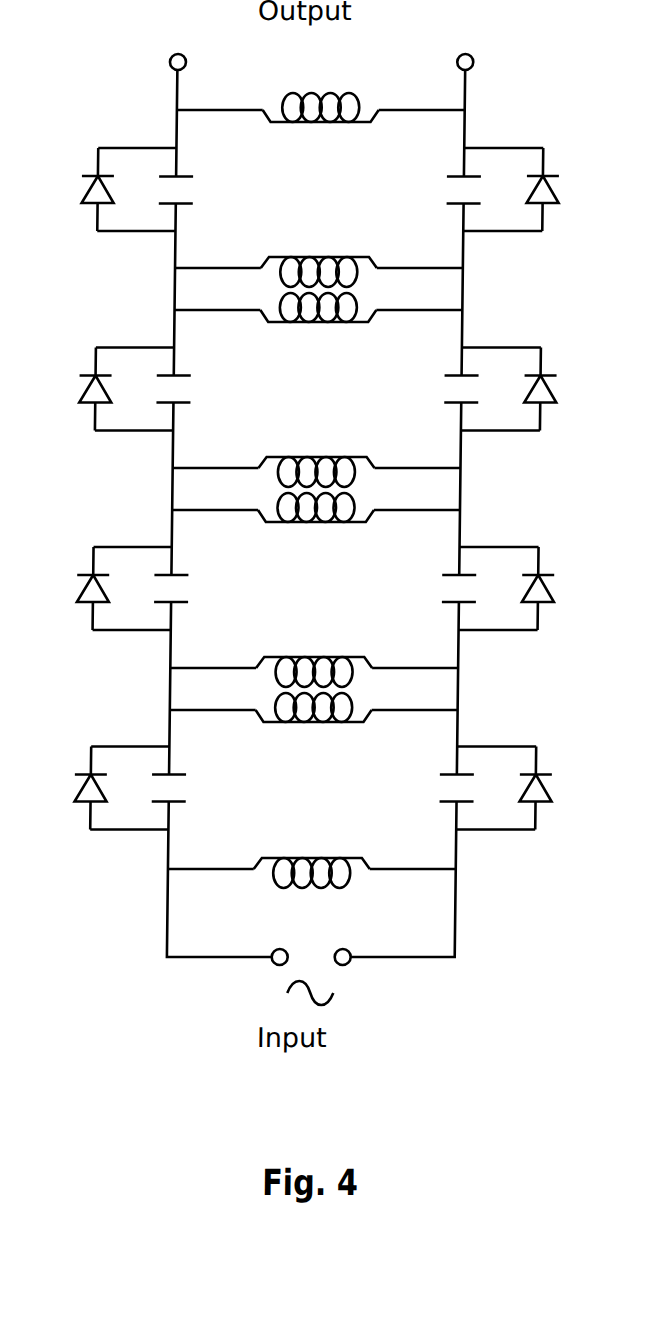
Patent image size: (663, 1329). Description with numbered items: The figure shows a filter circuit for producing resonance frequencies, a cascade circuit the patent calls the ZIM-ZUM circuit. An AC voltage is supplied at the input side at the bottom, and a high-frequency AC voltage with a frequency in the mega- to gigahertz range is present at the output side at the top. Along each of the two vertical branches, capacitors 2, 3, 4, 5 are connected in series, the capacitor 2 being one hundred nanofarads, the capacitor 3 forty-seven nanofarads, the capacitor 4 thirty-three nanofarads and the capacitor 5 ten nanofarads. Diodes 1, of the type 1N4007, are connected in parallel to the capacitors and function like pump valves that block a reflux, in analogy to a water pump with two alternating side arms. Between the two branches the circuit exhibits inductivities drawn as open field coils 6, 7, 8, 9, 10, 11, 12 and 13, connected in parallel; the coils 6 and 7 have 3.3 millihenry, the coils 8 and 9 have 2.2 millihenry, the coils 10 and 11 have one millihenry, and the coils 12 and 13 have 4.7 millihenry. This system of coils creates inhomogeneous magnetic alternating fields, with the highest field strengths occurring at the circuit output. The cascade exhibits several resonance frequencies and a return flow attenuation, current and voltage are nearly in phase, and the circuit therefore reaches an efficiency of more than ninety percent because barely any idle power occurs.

The diode 1 is at (313, 489).
The capacitor 2 is at (313, 788).
The capacitor 3 is at (315, 588).
The capacitor 4 is at (317, 389).
The capacitor 5 is at (320, 190).
The inductance 6 is at (312, 857).
The inductance 7 is at (313, 723).
The inductance 8 is at (314, 656).
The inductance 9 is at (316, 523).
The inductance 10 is at (316, 456).
The inductance 11 is at (318, 323).
The inductance 12 is at (319, 256).
The inductance 13 is at (320, 123).